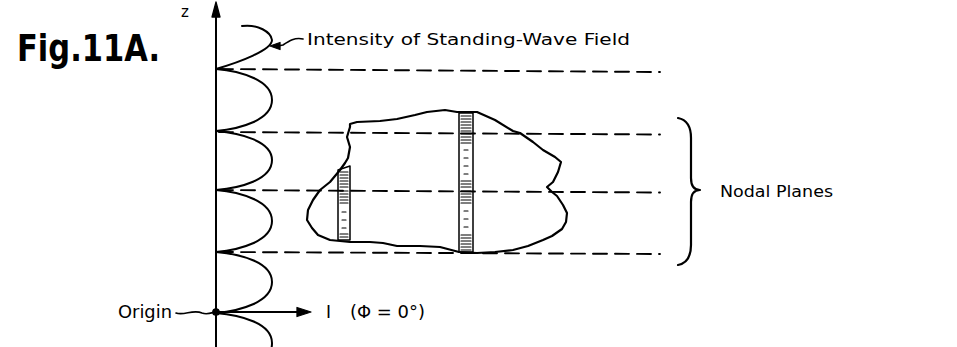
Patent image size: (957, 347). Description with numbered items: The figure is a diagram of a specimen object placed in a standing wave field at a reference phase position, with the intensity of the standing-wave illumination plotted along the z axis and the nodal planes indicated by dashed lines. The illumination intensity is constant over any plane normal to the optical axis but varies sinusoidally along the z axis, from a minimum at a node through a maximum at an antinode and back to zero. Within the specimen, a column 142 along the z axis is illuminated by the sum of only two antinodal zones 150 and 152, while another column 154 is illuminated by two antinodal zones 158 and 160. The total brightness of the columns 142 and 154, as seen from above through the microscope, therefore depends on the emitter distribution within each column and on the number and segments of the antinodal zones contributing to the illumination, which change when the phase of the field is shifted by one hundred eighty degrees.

The column 142 is at (502, 169).
The antinodal zone 150 is at (473, 160).
The antinodal zone 152 is at (473, 218).
The column 154 is at (348, 190).
The antinodal zone 158 is at (350, 168).
The antinodal zone 160 is at (350, 219).